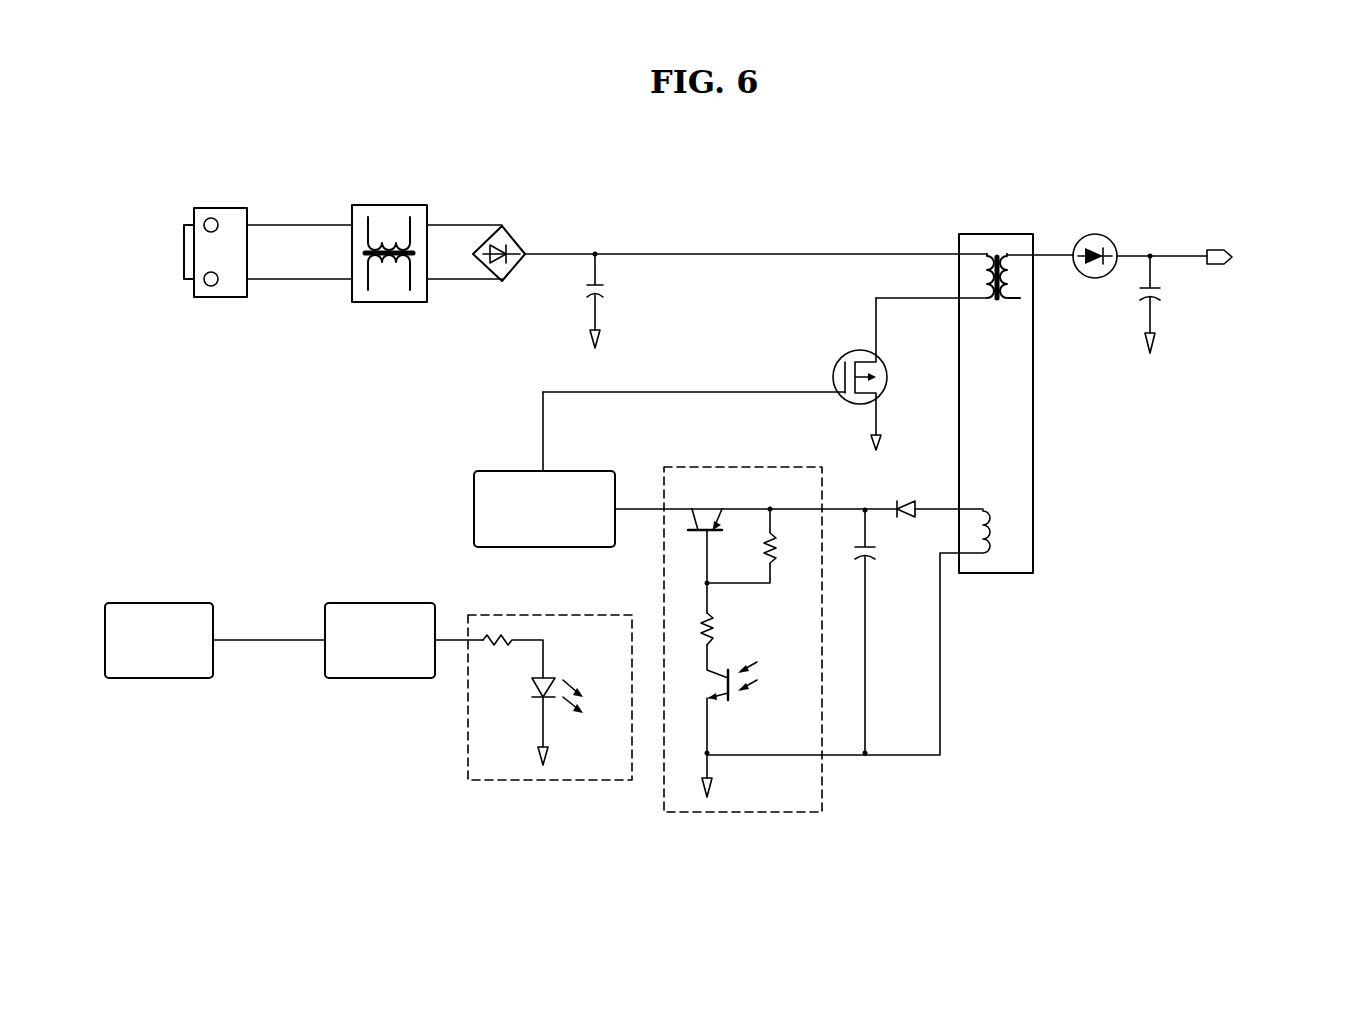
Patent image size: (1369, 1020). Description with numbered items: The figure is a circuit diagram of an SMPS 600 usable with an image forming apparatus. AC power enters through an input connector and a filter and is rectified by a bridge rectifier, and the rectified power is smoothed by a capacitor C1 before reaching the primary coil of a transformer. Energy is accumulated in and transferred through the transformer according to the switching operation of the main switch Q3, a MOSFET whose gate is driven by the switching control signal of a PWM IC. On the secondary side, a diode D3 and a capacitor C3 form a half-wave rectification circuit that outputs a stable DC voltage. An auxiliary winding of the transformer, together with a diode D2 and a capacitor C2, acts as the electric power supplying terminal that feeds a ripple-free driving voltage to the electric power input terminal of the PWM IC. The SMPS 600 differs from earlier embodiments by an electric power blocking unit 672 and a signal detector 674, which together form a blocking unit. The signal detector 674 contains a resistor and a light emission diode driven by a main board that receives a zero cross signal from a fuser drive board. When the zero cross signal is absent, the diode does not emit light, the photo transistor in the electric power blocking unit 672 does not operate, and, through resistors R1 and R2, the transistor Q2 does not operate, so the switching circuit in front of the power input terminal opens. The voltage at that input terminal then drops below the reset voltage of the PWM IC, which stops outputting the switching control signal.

The SMPS 600 is at (810, 203).
The electric power blocking unit 672 is at (747, 465).
The signal detector 674 is at (565, 613).
The capacitor C1 is at (609, 300).
The capacitor C2 is at (878, 632).
The capacitor C3 is at (1164, 304).
The diode D2 is at (876, 496).
The diode D3 is at (1095, 270).
The transistor Q2 is at (729, 507).
The main switch Q3 is at (875, 374).
The resistor R1 is at (722, 629).
The resistor R2 is at (756, 545).